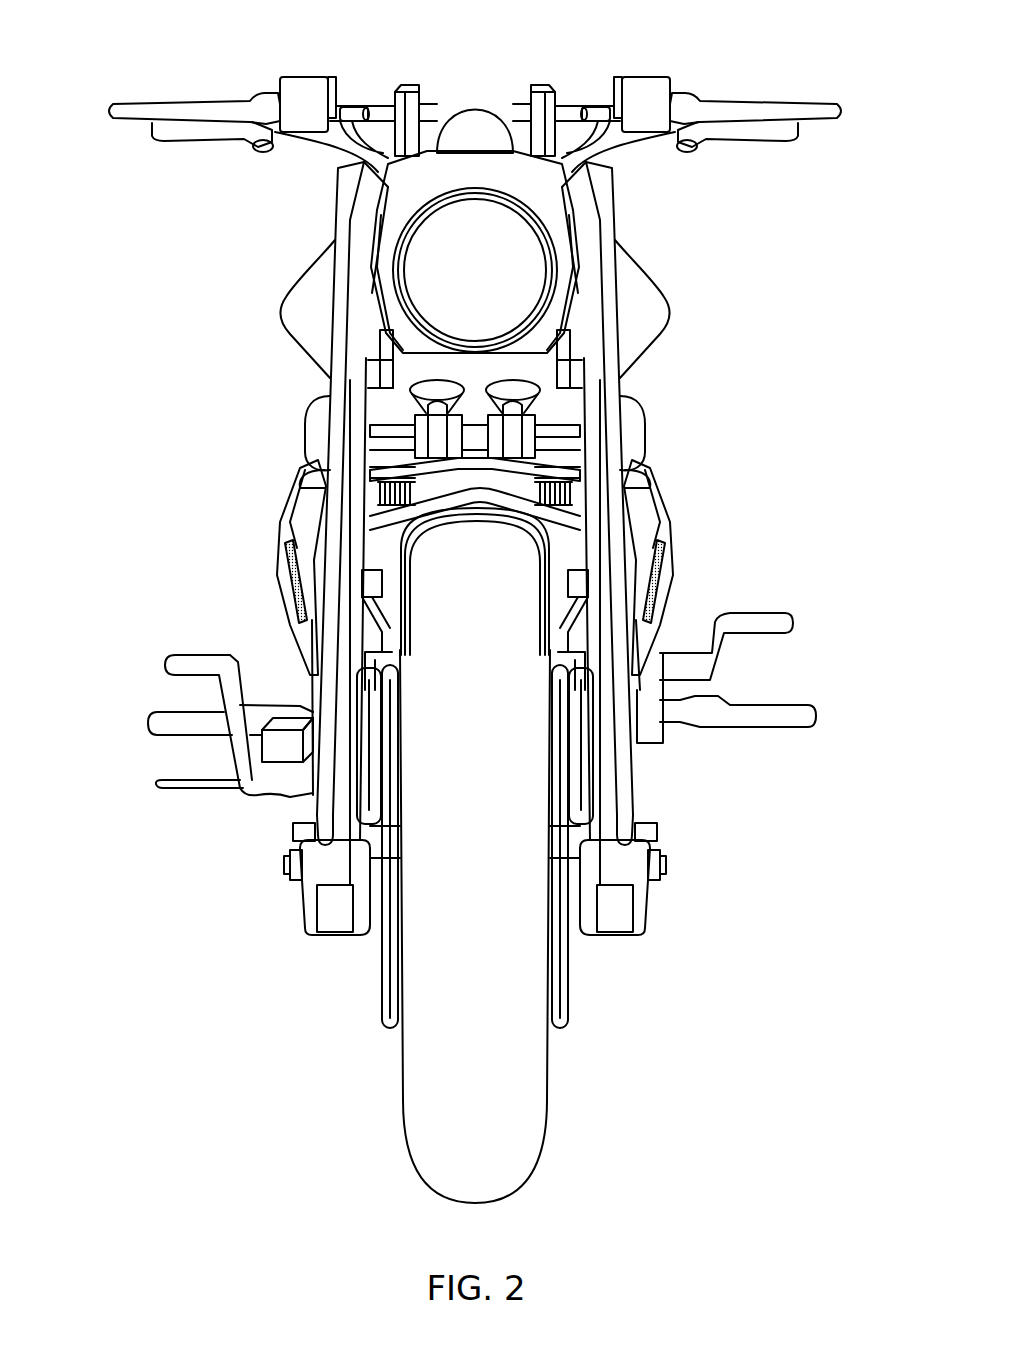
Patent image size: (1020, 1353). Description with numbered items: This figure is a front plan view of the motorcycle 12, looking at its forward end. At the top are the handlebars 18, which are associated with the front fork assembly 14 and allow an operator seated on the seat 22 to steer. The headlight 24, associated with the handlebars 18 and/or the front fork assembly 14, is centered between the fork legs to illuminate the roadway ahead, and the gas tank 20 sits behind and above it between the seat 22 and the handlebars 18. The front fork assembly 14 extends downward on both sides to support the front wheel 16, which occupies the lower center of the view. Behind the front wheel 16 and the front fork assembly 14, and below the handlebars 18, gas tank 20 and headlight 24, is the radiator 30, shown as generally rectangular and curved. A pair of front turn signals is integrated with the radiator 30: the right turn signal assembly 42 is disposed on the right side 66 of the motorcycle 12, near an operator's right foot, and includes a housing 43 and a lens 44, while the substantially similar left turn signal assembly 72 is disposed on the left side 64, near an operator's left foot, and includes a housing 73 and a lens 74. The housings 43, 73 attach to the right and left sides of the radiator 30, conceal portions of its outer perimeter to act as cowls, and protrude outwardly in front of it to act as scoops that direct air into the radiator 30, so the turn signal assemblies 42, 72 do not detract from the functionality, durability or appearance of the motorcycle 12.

The motorcycle 12 is at (460, 601).
The handlebars 18 is at (475, 86).
The gas tank 20 is at (537, 264).
The seat 22 is at (527, 442).
The headlight 24 is at (461, 289).
The front fork assembly 14 is at (438, 548).
The radiator 30 is at (385, 556).
The front wheel 16 is at (408, 1095).
The right turn signal assembly 42 is at (249, 627).
The housing 43 is at (290, 527).
The lens 44 is at (293, 563).
The left turn signal assembly 72 is at (698, 575).
The housing 73 is at (662, 527).
The lens 74 is at (663, 561).
The right side 66 is at (194, 505).
The left side 64 is at (762, 482).